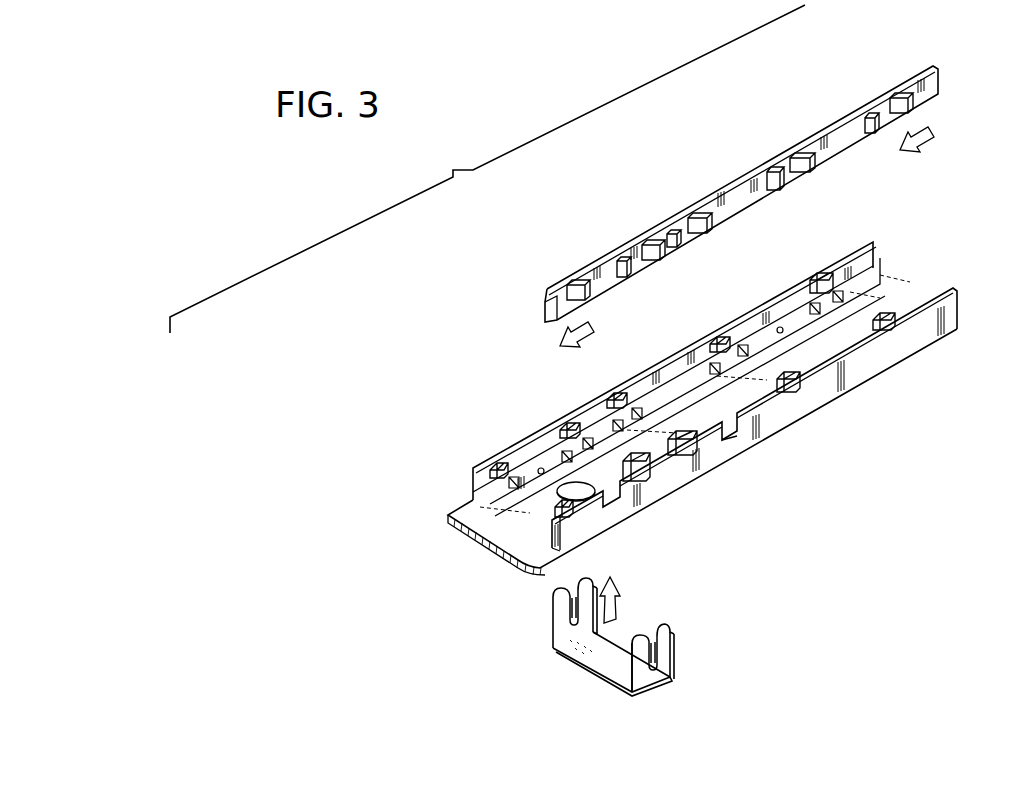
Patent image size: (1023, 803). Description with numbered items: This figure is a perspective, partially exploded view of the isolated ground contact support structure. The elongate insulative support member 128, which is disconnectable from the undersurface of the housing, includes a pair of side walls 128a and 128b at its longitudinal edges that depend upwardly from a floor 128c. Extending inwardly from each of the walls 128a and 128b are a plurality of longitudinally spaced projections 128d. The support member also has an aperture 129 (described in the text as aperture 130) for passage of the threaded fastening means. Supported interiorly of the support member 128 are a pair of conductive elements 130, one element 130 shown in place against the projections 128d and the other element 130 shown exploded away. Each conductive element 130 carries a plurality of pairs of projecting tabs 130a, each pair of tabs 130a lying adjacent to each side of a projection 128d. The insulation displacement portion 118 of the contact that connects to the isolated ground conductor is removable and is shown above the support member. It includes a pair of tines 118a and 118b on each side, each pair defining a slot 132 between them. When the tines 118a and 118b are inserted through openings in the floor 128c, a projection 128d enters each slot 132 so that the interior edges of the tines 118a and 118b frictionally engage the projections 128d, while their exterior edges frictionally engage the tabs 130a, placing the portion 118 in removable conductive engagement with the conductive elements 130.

The insulation displacement portion 118 is at (619, 645).
The tine 118a is at (553, 608).
The tine 118b is at (585, 583).
The support member 128 is at (713, 418).
The side wall 128a is at (768, 418).
The side wall 128b is at (685, 352).
The floor 128c is at (500, 530).
The projections 128d is at (822, 280).
The hole 129 is at (580, 483).
The conductive element 130 is at (738, 188).
The projecting tabs 130a is at (769, 189).
The slot 132 is at (570, 612).